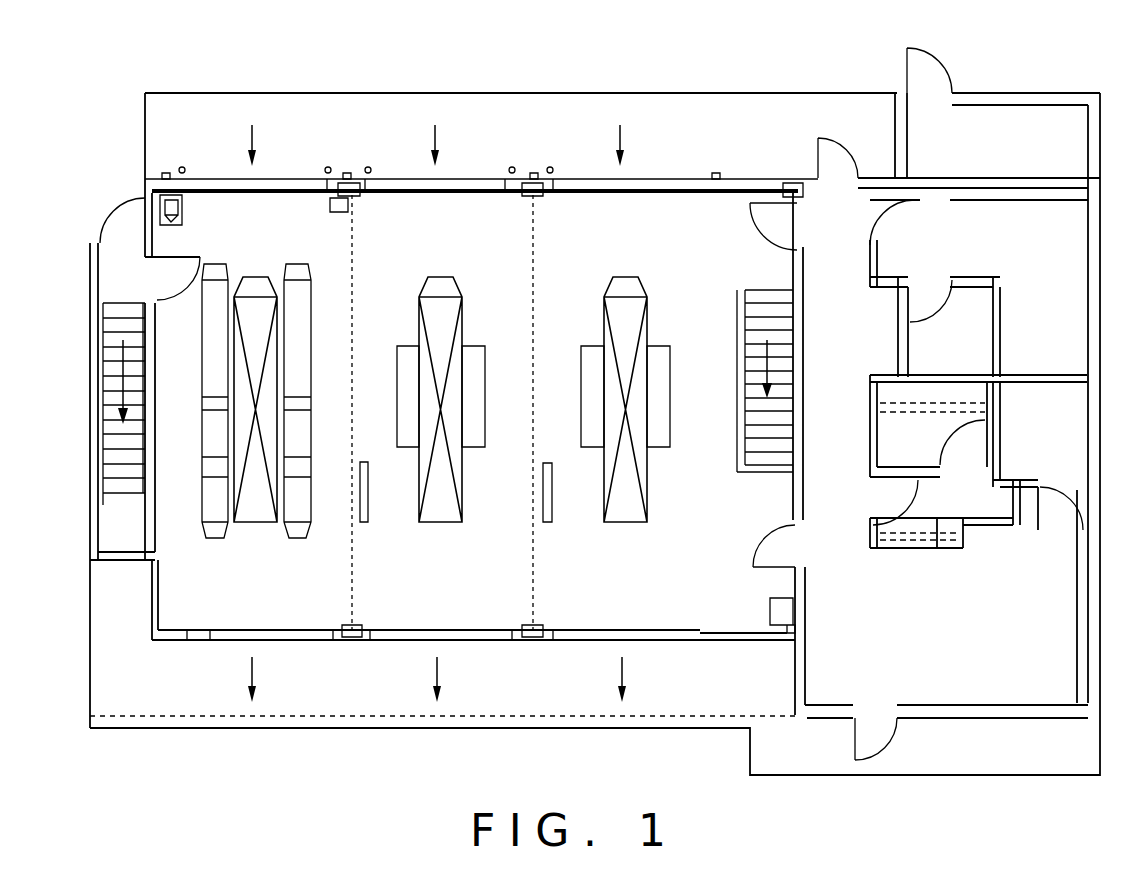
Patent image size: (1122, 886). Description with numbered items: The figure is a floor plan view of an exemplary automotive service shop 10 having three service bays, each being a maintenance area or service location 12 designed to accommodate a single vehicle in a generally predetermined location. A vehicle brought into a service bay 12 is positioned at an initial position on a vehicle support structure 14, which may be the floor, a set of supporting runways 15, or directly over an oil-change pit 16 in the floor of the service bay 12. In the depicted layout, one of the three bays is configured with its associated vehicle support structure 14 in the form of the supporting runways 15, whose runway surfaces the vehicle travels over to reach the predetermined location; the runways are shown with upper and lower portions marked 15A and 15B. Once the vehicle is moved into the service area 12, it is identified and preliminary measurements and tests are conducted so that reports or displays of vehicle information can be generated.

The automotive service shop 10 is at (800, 66).
The service bay 12 is at (289, 219).
The vehicle support structure 14 is at (337, 558).
The supporting runways 15 is at (212, 252).
The turnstile entry section 15A is at (215, 369).
The turnstile exit section 15B is at (218, 507).
The oil-change pit 16 is at (263, 512).